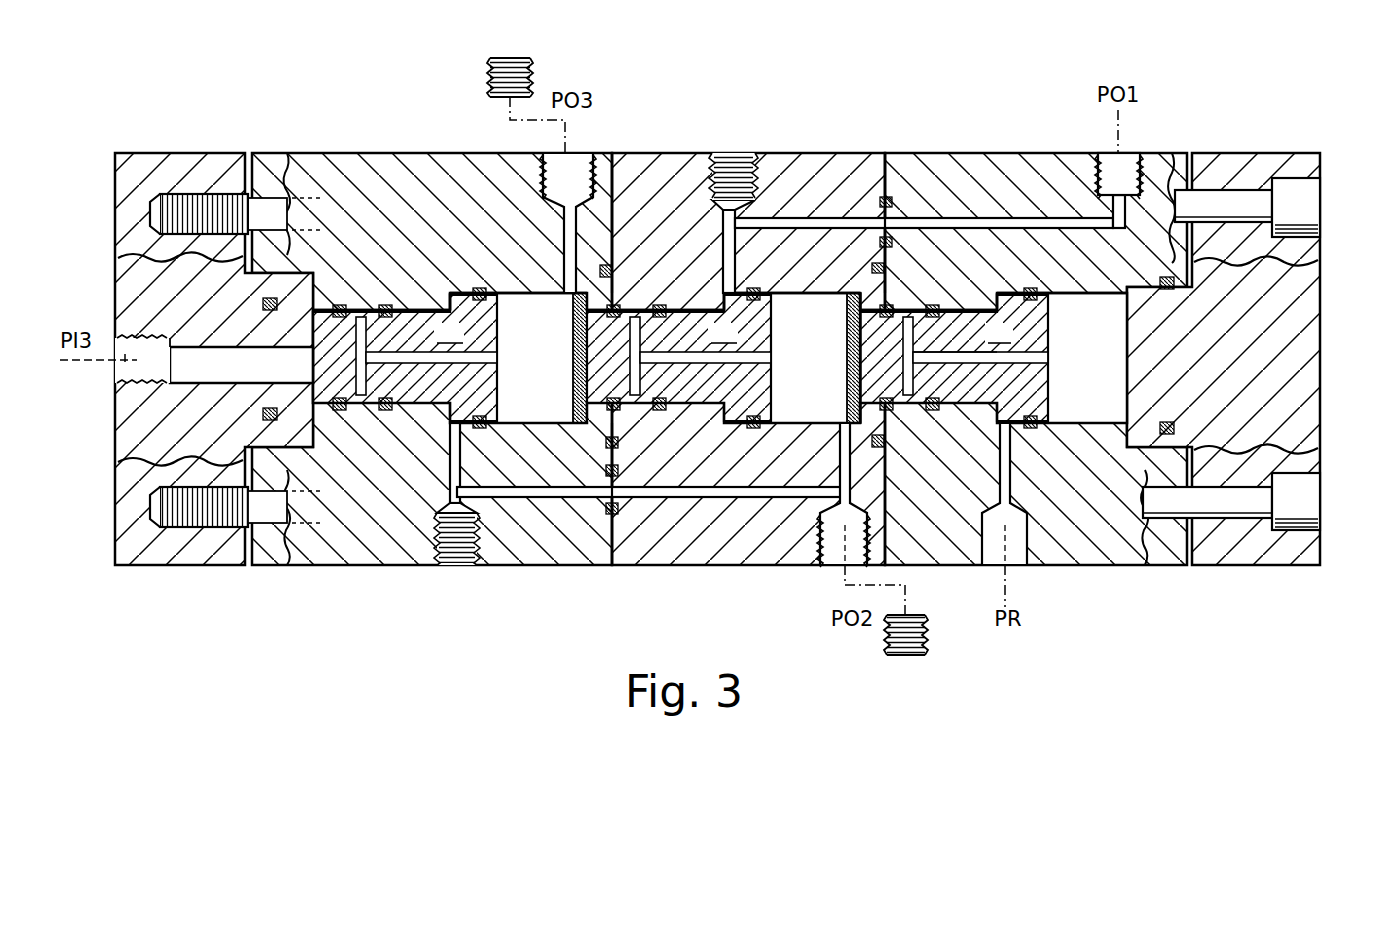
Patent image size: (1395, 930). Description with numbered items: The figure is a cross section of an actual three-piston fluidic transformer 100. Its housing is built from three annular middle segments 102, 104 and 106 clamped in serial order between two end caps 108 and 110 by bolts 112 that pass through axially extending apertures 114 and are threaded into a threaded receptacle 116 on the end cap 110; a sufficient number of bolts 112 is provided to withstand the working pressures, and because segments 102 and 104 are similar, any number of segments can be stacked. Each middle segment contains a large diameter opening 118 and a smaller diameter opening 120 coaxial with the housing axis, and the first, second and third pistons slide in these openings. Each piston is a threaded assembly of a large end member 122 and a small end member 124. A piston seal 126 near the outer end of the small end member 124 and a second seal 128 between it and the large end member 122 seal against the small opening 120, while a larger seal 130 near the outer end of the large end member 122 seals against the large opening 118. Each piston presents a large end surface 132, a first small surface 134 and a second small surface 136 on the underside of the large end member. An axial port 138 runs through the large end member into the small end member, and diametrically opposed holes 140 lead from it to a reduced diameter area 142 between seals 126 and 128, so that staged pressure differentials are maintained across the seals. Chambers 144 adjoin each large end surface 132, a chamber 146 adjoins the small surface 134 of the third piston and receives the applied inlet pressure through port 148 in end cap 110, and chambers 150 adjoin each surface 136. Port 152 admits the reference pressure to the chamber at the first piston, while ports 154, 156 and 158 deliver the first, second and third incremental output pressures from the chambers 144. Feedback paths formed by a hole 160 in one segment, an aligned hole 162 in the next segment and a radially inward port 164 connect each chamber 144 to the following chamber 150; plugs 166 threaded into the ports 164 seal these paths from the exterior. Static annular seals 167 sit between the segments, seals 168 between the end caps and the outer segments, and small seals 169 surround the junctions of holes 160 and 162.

The three-piston transformer 100 is at (1192, 100).
The middle segment 102 is at (1030, 153).
The middle segment 104 is at (805, 155).
The middle segment 106 is at (378, 153).
The end cap 108 is at (1320, 350).
The end cap 110 is at (120, 270).
The bolts 112 is at (275, 194).
The apertures 114 is at (288, 244).
The threaded hole 116 is at (205, 194).
The large diameter opening 118 is at (550, 427).
The smaller diameter opening 120 is at (390, 410).
The large end member 122 is at (497, 400).
The small end member 124 is at (573, 385).
The annular piston seal 126 is at (340, 305).
The annular seal 128 is at (395, 305).
The larger annular seal 130 is at (480, 430).
The large end surface 132 is at (485, 300).
The first small surface 134 is at (573, 345).
The second small surface 136 is at (440, 422).
The axially extending port 138 is at (498, 360).
The diametrically opposed holes 140 is at (918, 376).
The reduced diameter area 142 is at (355, 300).
The chambers 144 is at (520, 335).
The chamber 146 is at (310, 364).
The port 148 is at (290, 352).
The chambers 150 is at (462, 290).
The port 152 is at (1010, 493).
The port 154 is at (1113, 252).
The port 156 is at (852, 492).
The port 158 is at (572, 242).
The hole 160 is at (1020, 229).
The hole 162 is at (857, 229).
The radially inward extending port 164 is at (740, 251).
The plugs 166 is at (490, 76).
The static annular seals 167 is at (612, 280).
The static annular seals 168 is at (265, 308).
The small static annular seals 169 is at (890, 200).